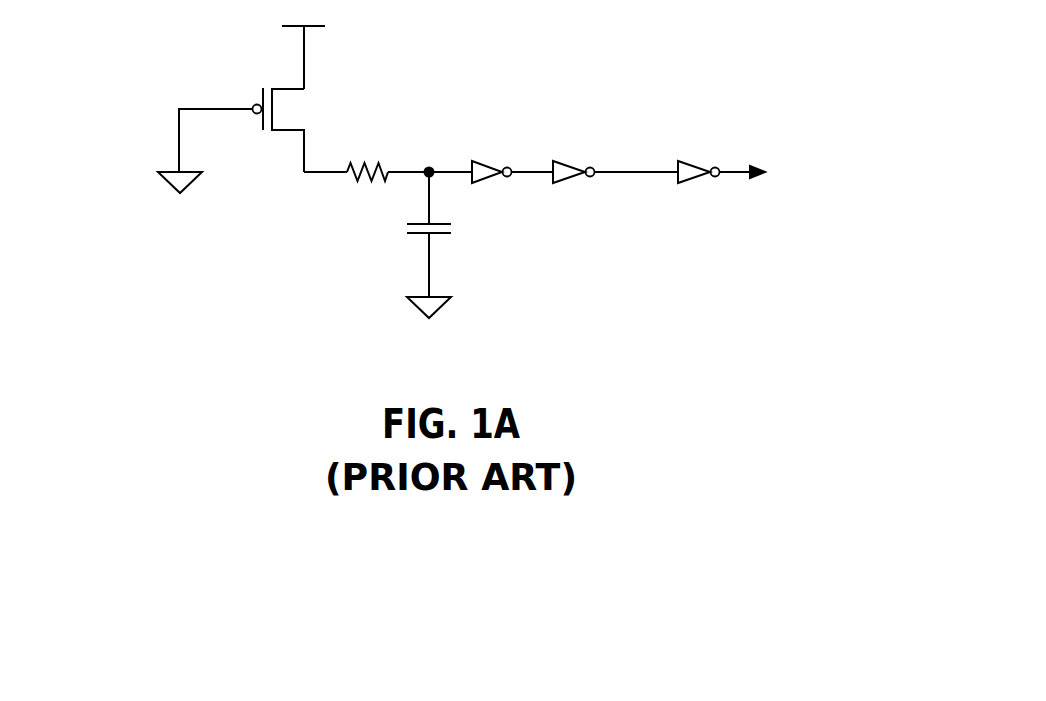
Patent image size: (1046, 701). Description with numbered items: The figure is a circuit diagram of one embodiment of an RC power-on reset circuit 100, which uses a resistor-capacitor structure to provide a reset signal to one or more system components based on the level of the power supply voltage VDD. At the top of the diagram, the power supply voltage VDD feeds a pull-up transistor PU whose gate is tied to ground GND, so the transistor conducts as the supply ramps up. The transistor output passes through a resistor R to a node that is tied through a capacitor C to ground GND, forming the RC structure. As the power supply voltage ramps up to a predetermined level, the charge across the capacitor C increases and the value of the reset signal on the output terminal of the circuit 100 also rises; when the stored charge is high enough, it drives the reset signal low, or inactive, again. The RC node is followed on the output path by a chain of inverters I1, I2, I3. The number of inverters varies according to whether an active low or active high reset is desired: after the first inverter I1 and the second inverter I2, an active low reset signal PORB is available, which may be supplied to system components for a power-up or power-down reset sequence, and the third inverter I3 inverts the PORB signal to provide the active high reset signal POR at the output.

The power-on reset circuit 100 is at (555, 33).
The power supply voltage VDD is at (302, 44).
The pull-up transistor PU is at (258, 130).
The ground GND is at (304, 261).
The resistor R is at (367, 158).
The capacitor C is at (442, 234).
The first inverter I1 is at (492, 159).
The second inverter I2 is at (574, 159).
The third inverter I3 is at (699, 159).
The active low reset signal PORB is at (637, 159).
The active high reset signal POR is at (748, 162).